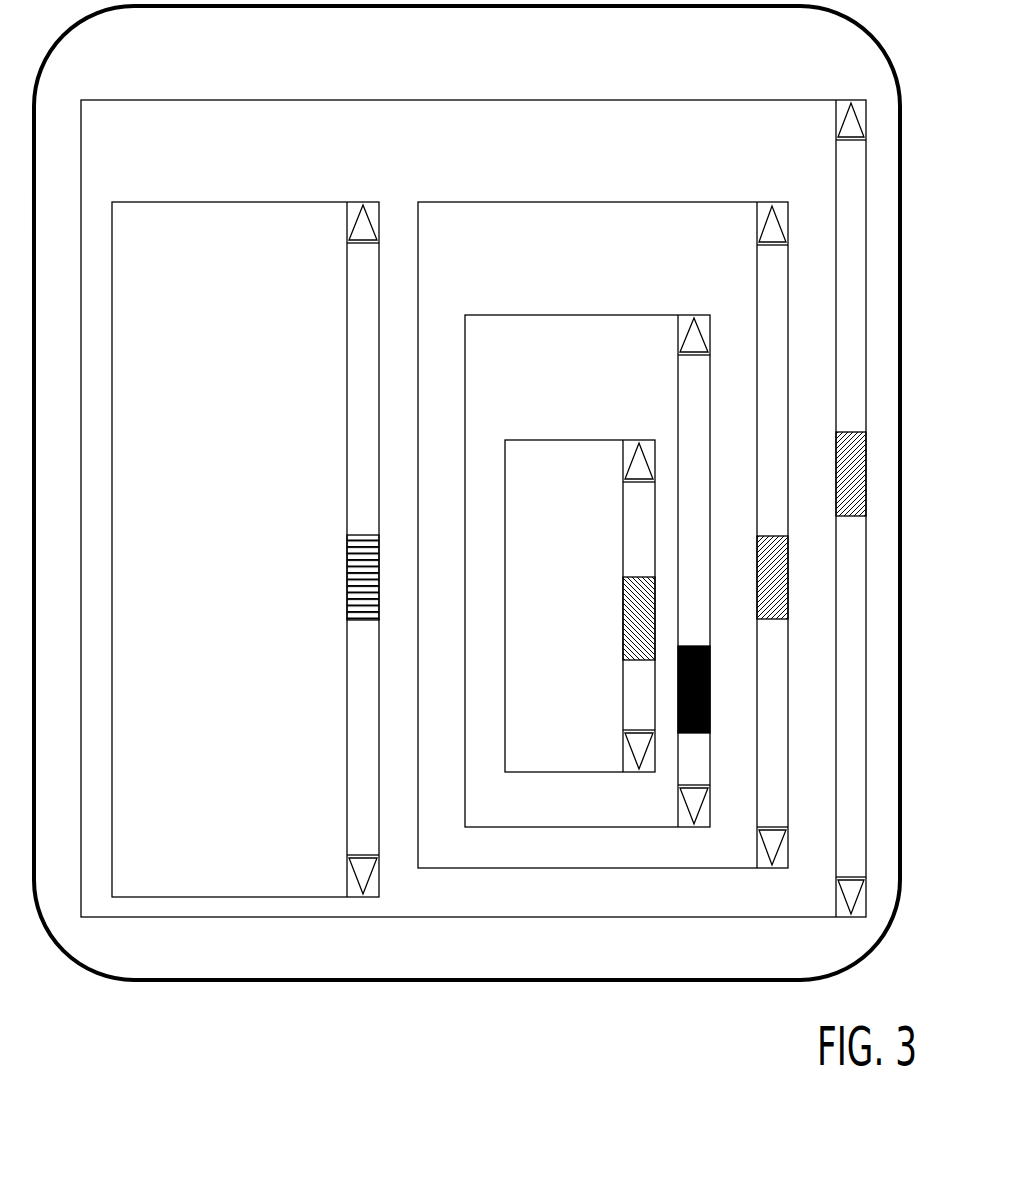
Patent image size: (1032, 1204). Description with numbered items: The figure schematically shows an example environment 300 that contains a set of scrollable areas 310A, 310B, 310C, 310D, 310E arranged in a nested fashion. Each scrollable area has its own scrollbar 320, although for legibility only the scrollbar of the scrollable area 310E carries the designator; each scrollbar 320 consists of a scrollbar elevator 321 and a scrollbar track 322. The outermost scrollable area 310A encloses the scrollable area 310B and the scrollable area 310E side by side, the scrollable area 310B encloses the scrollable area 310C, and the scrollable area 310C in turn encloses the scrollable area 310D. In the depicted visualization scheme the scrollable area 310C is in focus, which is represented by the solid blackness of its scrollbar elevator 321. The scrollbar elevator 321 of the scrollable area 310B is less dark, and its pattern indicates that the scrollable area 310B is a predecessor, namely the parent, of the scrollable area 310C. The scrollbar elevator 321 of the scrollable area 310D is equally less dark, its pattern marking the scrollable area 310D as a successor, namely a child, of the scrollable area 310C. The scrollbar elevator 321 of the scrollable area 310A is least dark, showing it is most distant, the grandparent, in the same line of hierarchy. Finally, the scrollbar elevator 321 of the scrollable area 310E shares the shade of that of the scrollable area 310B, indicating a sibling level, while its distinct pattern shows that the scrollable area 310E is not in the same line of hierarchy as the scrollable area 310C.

The environment 300 is at (194, 58).
The scrollable area 310A is at (439, 169).
The scrollable area 310B is at (598, 268).
The scrollable area 310C is at (614, 393).
The scrollable area 310D is at (591, 533).
The scrollable area 310E is at (245, 549).
The scrollbar 320 is at (314, 549).
The scrollbar elevator 321 is at (350, 594).
The scrollbar track 322 is at (362, 480).